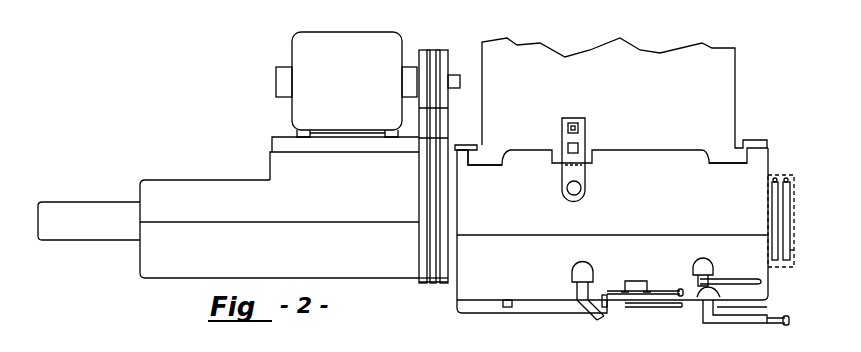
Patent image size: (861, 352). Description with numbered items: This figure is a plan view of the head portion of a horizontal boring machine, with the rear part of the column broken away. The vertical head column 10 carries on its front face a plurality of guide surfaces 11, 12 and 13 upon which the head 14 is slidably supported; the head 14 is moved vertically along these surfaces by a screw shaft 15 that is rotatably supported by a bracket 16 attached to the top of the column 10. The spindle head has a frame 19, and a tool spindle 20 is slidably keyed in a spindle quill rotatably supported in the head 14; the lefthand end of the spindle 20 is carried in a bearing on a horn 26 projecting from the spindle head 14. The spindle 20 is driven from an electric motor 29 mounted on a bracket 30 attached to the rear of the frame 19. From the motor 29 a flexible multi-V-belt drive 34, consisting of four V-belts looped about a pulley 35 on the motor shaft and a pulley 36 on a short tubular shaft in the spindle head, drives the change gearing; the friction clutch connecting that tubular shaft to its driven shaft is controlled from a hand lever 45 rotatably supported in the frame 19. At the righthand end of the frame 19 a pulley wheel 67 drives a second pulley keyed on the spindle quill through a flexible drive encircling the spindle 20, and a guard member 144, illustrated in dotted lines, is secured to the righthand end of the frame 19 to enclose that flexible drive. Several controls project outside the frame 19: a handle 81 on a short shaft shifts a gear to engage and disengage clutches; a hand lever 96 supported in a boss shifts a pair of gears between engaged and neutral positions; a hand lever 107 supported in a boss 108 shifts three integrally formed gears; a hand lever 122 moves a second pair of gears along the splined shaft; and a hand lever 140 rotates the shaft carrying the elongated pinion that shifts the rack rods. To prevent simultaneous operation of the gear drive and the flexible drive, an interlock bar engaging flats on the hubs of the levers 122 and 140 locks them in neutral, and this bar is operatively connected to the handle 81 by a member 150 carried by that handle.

The vertical head column 10 is at (736, 90).
The guide surface 11 is at (497, 160).
The guide surface 12 is at (583, 150).
The guide surface 13 is at (728, 164).
The head 14 is at (612, 222).
The screw shaft 15 is at (582, 190).
The bracket 16 is at (565, 173).
The frame 19 is at (611, 229).
The tool spindle 20 is at (82, 240).
The horn 26 is at (167, 279).
The electric motor 29 is at (346, 84).
The bracket 30 is at (290, 146).
The flexible multi-V-belt drive 34 is at (419, 188).
The pulley 35 is at (449, 62).
The pulley 36 is at (422, 284).
The hand lever 45 is at (508, 308).
The pulley wheel 67 is at (793, 256).
The handle 81 is at (592, 314).
The hand lever 96 is at (656, 291).
The hand lever 107 is at (742, 277).
The boss 108 is at (712, 265).
The hand lever 122 is at (749, 323).
The hand lever 140 is at (661, 309).
The guard member 144 is at (783, 175).
The member 150 is at (604, 296).